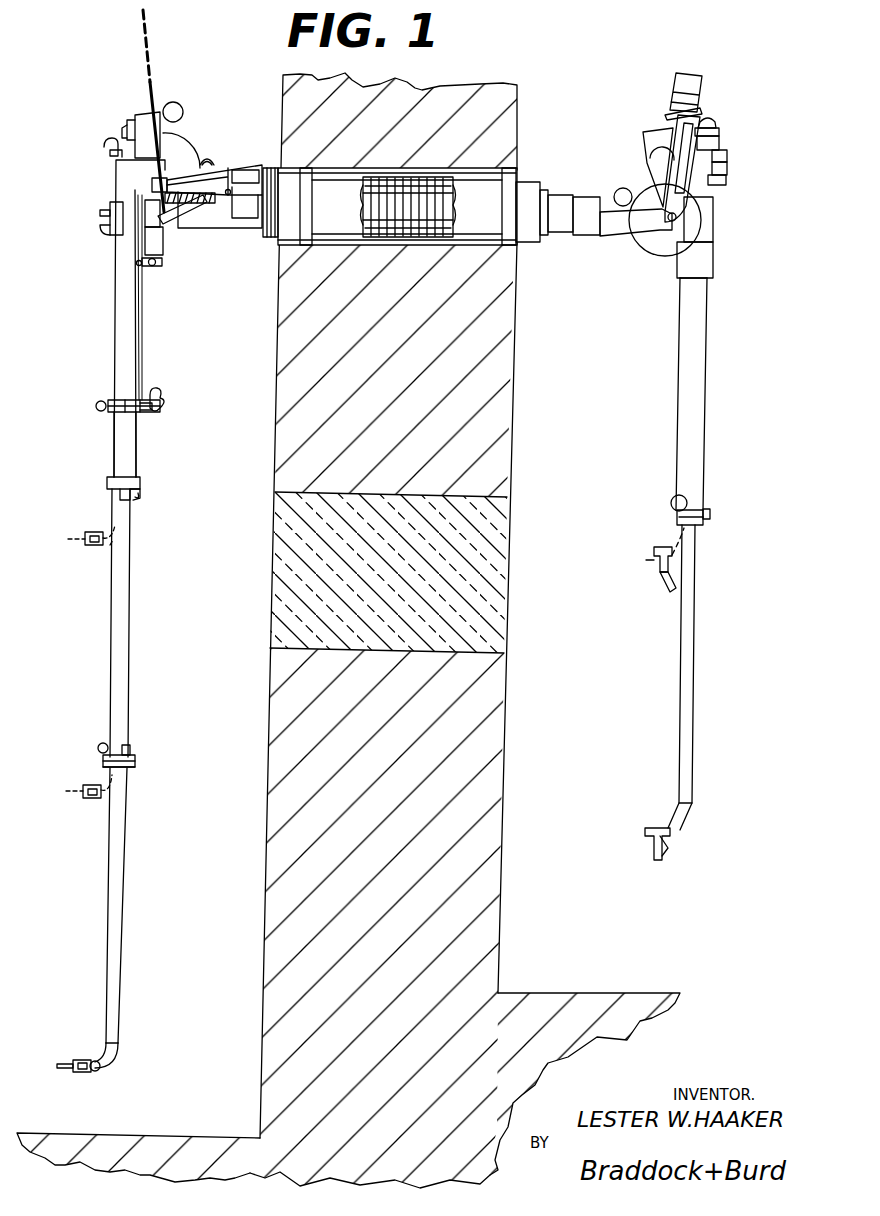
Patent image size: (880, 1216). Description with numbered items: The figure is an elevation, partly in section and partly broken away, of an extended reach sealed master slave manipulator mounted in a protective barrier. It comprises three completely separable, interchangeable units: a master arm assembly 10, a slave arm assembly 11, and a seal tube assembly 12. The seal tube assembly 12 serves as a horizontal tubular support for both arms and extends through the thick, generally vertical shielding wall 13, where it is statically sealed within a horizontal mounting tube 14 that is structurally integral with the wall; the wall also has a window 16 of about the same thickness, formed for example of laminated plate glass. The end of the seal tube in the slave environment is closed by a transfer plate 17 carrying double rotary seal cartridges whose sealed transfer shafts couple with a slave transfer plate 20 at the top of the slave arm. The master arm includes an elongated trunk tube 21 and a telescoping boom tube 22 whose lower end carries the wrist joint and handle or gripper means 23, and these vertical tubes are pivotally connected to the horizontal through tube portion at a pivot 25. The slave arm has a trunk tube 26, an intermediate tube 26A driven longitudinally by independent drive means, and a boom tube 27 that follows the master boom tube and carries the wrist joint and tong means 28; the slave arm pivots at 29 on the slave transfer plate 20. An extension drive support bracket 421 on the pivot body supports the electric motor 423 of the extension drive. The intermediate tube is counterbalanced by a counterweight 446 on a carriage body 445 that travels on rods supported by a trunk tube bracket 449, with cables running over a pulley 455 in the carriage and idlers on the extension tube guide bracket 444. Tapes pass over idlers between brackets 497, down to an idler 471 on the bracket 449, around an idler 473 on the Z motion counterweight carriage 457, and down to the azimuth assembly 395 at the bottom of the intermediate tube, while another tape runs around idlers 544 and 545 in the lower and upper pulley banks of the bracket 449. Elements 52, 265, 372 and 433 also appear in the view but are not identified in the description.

The master arm assembly 10 is at (710, 330).
The slave arm assembly 11 is at (112, 338).
The seal tube assembly 12 is at (525, 176).
The barrier or shielding wall 13 is at (503, 375).
The horizontal mounting tube 14 is at (447, 243).
The window 16 is at (497, 535).
The transfer plate 17 is at (205, 220).
The slave transfer plate 20 is at (250, 165).
The trunk tube 21 is at (705, 448).
The boom tube 22 is at (689, 736).
The wrist joint and handle or gripper means 23 is at (645, 563).
The pivot connection 25 is at (671, 223).
The slave trunk tube 26 is at (112, 452).
The intermediate tube 26A is at (110, 628).
The slave boom tube 27 is at (112, 510).
The wrist joint and tong means 28 is at (102, 547).
The slave arm pivot 29 is at (152, 182).
The slave block 52 is at (714, 260).
The bracket 265 is at (251, 217).
The sector plate 372 is at (178, 147).
The azimuth assembly 395 is at (105, 758).
The extension drive support bracket 421 is at (150, 112).
The electric motor 423 is at (122, 130).
The knob 433 is at (178, 102).
The extension tube guide bracket 444 is at (107, 483).
The extension counterweight carriage body 445 is at (142, 266).
The counterweight 446 is at (164, 252).
The trunk tube bracket 449 is at (115, 415).
The pulley 455 is at (156, 264).
The Z motion counterweight carriage 457 is at (112, 218).
The idler 471 is at (98, 400).
The idler 473 is at (104, 232).
The bracket 497 is at (108, 152).
The idler 544 is at (160, 411).
The idler 545 is at (157, 390).